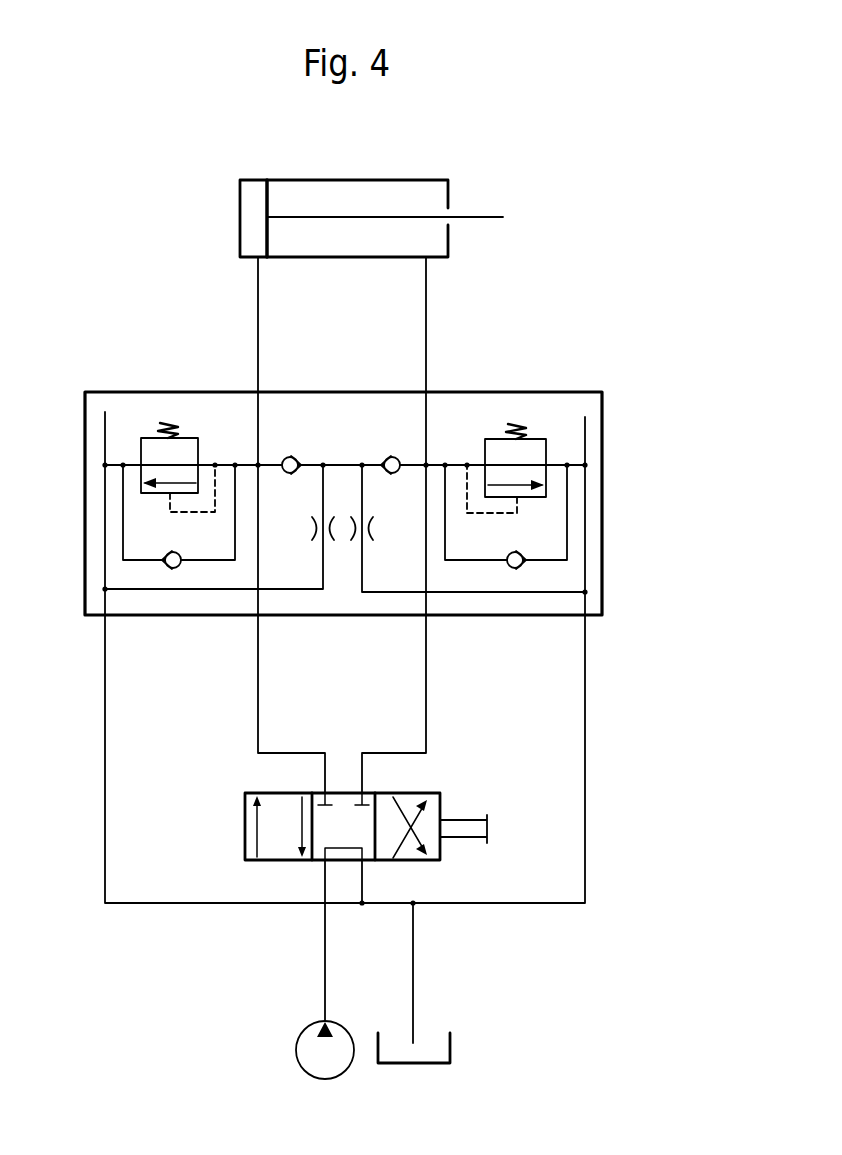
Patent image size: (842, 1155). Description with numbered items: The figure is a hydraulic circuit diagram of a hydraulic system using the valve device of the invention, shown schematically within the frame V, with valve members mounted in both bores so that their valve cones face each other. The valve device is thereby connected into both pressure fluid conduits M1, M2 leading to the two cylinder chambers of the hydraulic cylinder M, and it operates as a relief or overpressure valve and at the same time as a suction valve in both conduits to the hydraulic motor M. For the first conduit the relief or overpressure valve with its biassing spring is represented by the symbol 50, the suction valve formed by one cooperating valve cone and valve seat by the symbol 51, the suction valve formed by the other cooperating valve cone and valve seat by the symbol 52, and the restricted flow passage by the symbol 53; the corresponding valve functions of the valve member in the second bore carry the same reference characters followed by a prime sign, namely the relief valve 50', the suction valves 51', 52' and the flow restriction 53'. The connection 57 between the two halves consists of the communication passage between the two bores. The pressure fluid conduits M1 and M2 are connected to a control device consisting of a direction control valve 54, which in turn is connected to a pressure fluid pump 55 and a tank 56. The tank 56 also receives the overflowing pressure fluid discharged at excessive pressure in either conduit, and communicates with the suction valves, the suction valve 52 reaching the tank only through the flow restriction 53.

The hydraulic cylinder M is at (338, 195).
The pressure fluid conduit M1 is at (257, 323).
The pressure fluid conduit M2 is at (427, 333).
The frame V is at (604, 418).
The relief or overpressure valve 50 is at (169, 434).
The relief or overpressure valve 50' is at (506, 434).
The suction valve 51 is at (155, 599).
The suction valve 51' is at (541, 600).
The suction valve 52 is at (296, 415).
The suction valve 52' is at (381, 415).
The flow restriction 53 is at (323, 585).
The flow restriction 53' is at (371, 585).
The direction control valve 54 is at (442, 810).
The pressure fluid pump 55 is at (296, 1050).
The tank 56 is at (450, 1050).
The connection 57 is at (347, 463).